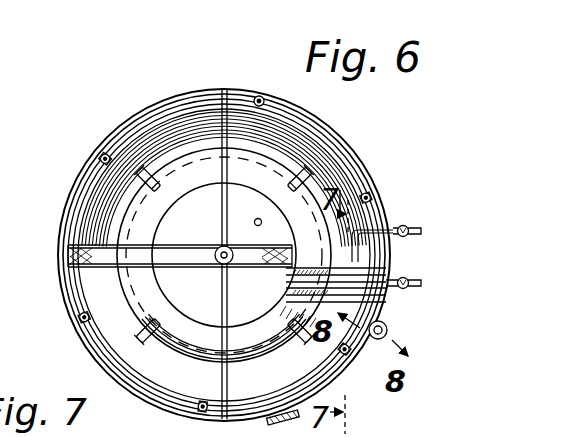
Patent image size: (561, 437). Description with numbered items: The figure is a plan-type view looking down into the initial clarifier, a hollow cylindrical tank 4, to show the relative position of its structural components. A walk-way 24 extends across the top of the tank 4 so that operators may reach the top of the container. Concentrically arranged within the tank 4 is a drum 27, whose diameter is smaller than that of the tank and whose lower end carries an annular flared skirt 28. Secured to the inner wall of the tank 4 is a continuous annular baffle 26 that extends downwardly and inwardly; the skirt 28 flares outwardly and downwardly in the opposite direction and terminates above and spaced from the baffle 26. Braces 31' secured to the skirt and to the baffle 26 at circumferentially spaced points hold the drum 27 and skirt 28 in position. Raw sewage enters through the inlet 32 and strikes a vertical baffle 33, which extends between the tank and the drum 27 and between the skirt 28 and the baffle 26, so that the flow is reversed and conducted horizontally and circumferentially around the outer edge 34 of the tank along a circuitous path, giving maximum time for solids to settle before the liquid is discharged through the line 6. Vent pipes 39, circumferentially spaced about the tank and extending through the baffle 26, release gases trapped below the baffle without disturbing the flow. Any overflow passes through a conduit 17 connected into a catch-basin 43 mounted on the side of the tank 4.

The hollow cylindrical tank 4 is at (116, 382).
The line 6 is at (393, 284).
The conduit 17 is at (387, 334).
The walk-way 24 is at (68, 257).
The continuous annular baffle 26 is at (262, 396).
The drum 27 is at (165, 298).
The annular flared skirt 28 is at (176, 350).
The braces 31' is at (237, 228).
The inlet 32 is at (392, 229).
The vertical baffle 33 is at (372, 268).
The outer edge 34 is at (266, 97).
The vent pipes 39 is at (103, 160).
The catch-basin 43 is at (386, 328).